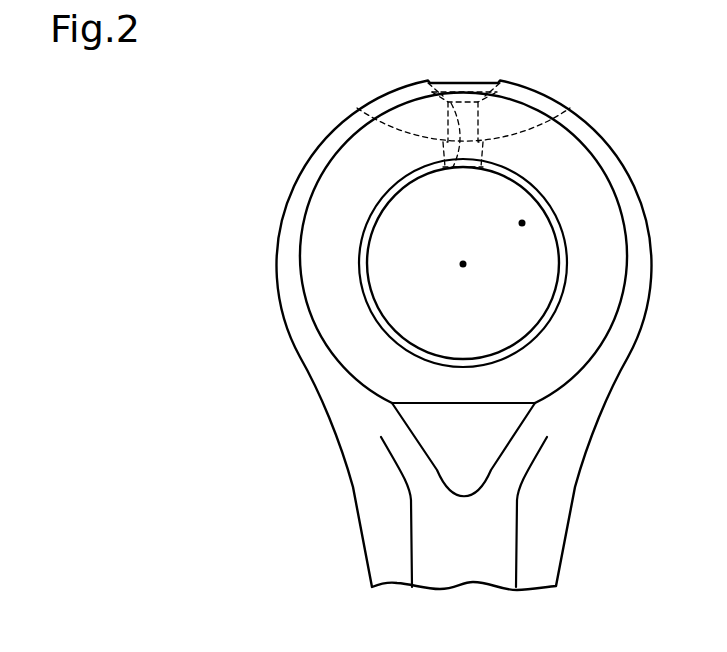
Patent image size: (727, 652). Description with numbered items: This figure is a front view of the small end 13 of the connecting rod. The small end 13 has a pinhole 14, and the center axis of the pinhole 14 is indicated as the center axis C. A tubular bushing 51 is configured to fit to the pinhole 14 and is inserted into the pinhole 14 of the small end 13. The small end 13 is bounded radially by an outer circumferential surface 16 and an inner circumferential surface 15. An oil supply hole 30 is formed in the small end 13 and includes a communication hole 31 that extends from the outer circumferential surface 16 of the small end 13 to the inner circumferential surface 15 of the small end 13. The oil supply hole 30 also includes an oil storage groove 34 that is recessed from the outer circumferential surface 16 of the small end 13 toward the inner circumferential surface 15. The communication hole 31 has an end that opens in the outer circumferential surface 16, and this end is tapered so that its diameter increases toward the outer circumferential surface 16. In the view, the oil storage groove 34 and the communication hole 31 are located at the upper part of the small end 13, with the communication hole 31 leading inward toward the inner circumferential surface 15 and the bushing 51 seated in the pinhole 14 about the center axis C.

The oil supply hole 30 is at (552, 79).
The outer circumferential surface 16 is at (330, 129).
The small end 13 is at (327, 200).
The inner circumferential surface 15 is at (372, 216).
The tubular bushing 51 is at (412, 348).
The oil storage groove 34 is at (393, 122).
The communication hole 31 is at (452, 168).
The pinhole 14 is at (524, 222).
The center axis C is at (466, 264).